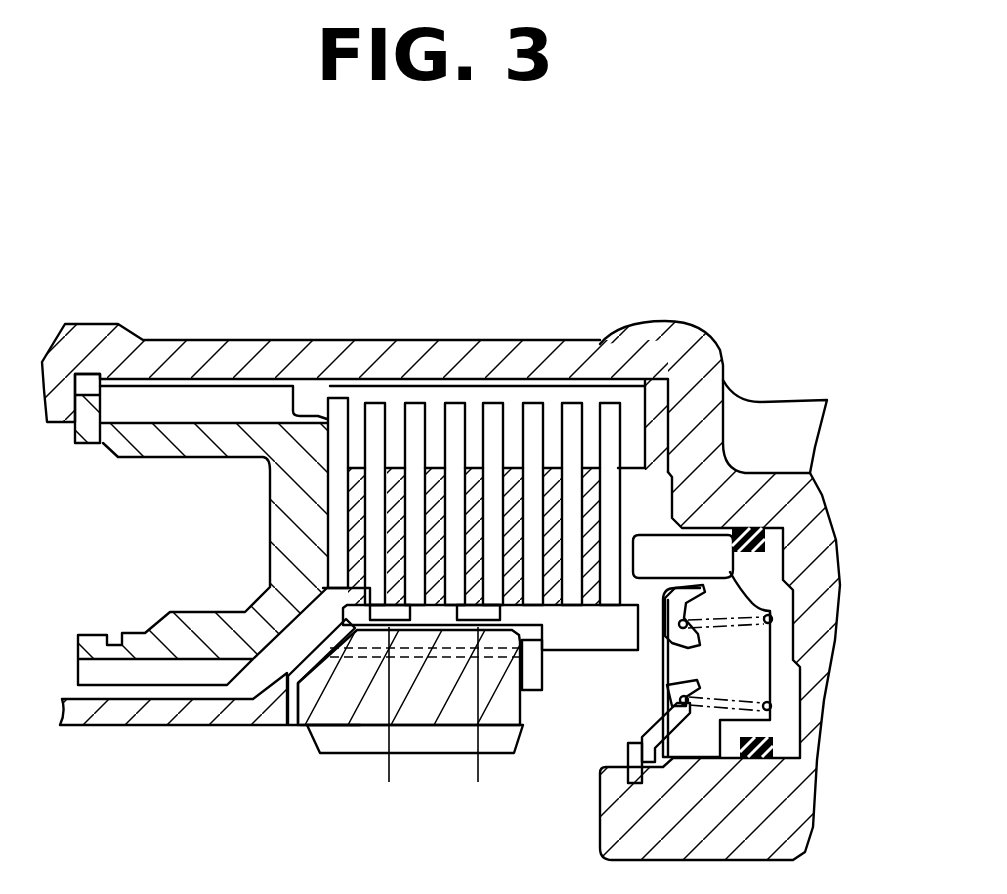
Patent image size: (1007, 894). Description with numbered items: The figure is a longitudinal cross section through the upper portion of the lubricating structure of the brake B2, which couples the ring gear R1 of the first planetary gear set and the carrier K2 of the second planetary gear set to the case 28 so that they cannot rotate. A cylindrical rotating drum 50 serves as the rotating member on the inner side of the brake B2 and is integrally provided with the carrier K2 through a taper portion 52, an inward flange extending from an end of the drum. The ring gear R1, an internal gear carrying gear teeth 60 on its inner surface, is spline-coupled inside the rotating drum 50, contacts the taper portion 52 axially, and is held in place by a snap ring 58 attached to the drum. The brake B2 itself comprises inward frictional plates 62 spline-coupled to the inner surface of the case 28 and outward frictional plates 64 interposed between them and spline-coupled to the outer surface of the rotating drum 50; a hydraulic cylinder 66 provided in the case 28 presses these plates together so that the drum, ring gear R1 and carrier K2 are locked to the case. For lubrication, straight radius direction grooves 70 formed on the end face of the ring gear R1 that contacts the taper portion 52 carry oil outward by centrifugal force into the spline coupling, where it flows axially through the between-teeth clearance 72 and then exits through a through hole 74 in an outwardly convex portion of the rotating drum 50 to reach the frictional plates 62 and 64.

The brake B2 is at (323, 350).
The case 28 is at (637, 347).
The hydraulic cylinder 66 is at (733, 518).
The inward frictional plates 62 is at (420, 413).
The outward frictional plates 64 is at (474, 505).
The rotating drum 50 is at (577, 618).
The taper portion 52 is at (300, 657).
The carrier K2 is at (100, 710).
The between-teeth clearance 72 is at (437, 627).
The through hole 74 is at (431, 722).
The ring gear R1 is at (355, 703).
The radius direction grooves 70 is at (283, 690).
The gear teeth 60 is at (323, 740).
The snap ring 58 is at (535, 673).